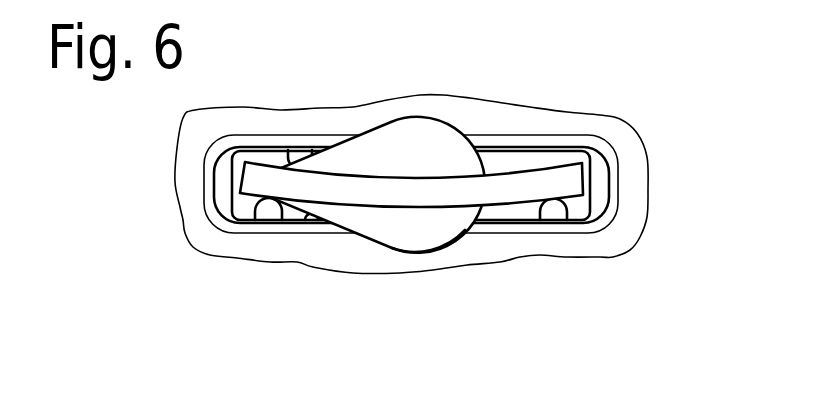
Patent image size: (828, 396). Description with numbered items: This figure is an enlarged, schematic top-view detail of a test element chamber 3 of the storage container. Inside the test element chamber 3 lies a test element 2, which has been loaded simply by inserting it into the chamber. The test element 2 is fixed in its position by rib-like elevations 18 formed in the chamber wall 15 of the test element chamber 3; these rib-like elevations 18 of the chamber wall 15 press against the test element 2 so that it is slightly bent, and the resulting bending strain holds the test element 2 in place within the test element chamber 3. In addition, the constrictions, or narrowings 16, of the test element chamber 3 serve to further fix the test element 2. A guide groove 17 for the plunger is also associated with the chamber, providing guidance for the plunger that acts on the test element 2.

The test element 2 is at (572, 180).
The test element chamber 3 is at (423, 145).
The chamber wall 15 is at (308, 218).
The narrowing of the test element chamber 16 is at (232, 183).
The guide groove for plunger 17 is at (432, 253).
The rib-like elevation in the chamber wall 18 is at (304, 155).